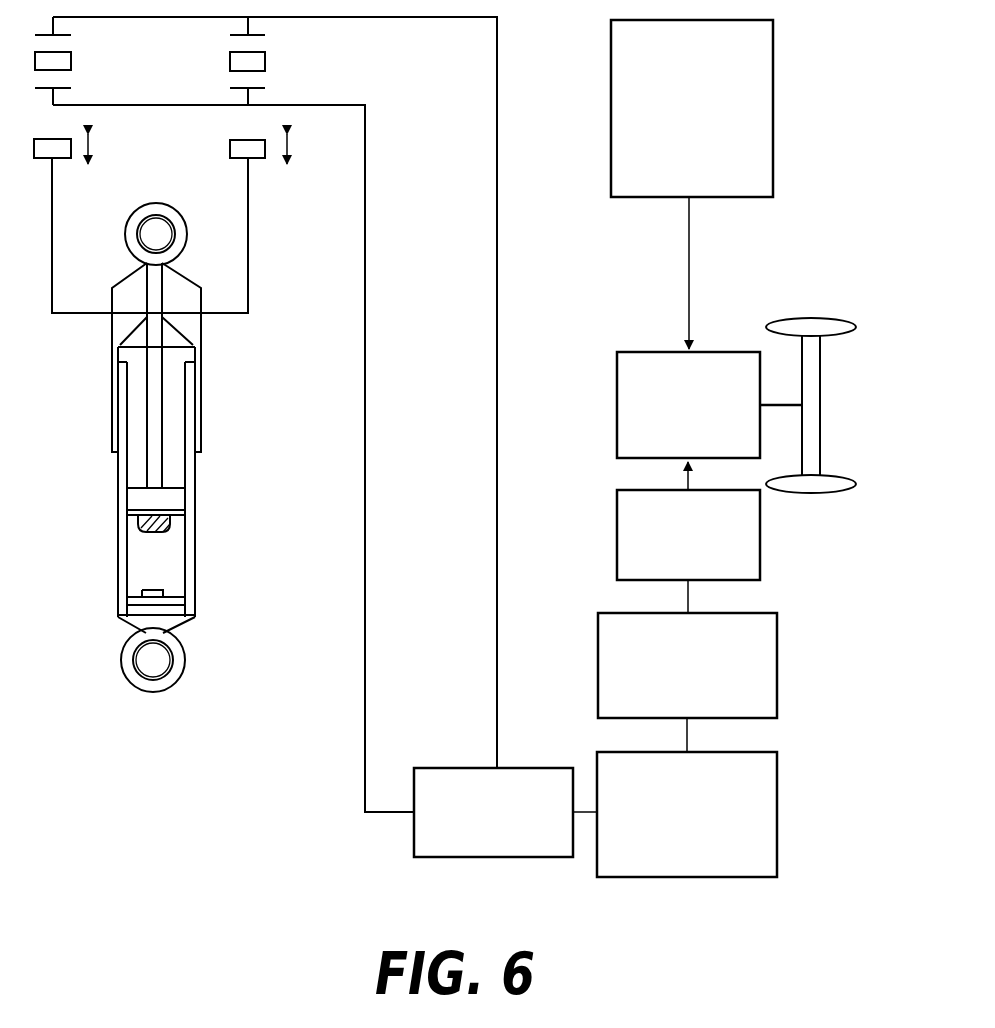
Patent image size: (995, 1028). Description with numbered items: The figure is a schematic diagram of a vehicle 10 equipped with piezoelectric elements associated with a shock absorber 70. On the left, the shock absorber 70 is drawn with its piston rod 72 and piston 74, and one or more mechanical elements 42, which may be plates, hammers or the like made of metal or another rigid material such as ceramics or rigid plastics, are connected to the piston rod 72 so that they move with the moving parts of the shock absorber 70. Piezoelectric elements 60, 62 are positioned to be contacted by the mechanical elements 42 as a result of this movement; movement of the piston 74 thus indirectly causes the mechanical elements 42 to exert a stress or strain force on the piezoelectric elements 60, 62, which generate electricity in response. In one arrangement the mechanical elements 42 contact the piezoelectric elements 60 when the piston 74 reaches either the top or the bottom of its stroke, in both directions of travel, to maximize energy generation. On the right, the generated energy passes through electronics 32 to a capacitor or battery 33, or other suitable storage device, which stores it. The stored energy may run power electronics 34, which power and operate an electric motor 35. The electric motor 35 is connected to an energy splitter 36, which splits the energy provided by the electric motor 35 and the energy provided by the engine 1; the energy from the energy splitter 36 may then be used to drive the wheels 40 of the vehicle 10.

The engine 1 is at (698, 122).
The vehicle 10 is at (824, 424).
The electronics 32 is at (506, 826).
The capacitor or battery 33 is at (701, 827).
The power electronics 34 is at (701, 674).
The electric motor 35 is at (703, 551).
The energy splitter 36 is at (703, 419).
The wheels 40 is at (814, 319).
The mechanical elements 42 is at (58, 150).
The piezoelectric element 60 is at (64, 60).
The piezoelectric element 62 is at (262, 60).
The shock absorber 70 is at (90, 458).
The piston rod 72 is at (152, 422).
The piston 74 is at (172, 501).